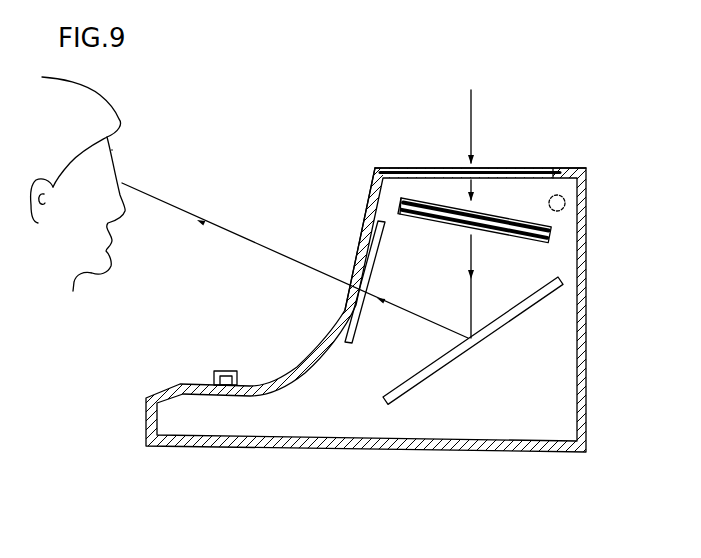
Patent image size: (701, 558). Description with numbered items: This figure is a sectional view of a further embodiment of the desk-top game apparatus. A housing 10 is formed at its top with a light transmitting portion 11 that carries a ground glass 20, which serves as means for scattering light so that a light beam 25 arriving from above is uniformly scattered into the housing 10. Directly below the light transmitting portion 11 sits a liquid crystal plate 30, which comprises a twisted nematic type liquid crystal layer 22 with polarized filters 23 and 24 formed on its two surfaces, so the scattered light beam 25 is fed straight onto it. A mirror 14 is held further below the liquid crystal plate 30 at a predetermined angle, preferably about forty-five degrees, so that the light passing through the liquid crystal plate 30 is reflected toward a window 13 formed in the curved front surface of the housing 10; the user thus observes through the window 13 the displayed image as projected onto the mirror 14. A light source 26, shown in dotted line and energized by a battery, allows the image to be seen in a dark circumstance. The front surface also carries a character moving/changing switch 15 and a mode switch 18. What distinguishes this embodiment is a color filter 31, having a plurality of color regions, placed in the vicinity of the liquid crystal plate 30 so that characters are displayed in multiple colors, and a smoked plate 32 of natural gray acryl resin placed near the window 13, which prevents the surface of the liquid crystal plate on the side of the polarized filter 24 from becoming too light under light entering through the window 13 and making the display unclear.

The housing 10 is at (587, 397).
The light transmitting portion 11 is at (507, 168).
The window 13 is at (353, 238).
The mirror 14 is at (531, 307).
The character moving/changing switch 15 is at (223, 371).
The mode switch 18 is at (238, 372).
The ground glass 20 is at (540, 169).
The twisted nematic type liquid crystal layer 22 is at (549, 240).
The polarized filter 23 is at (551, 233).
The polarized filter 24 is at (546, 245).
The light beam 25 is at (471, 118).
The light source 26 is at (563, 209).
The liquid crystal plate 30 is at (397, 205).
The color filter 31 is at (408, 197).
The smoked plate 32 is at (353, 316).